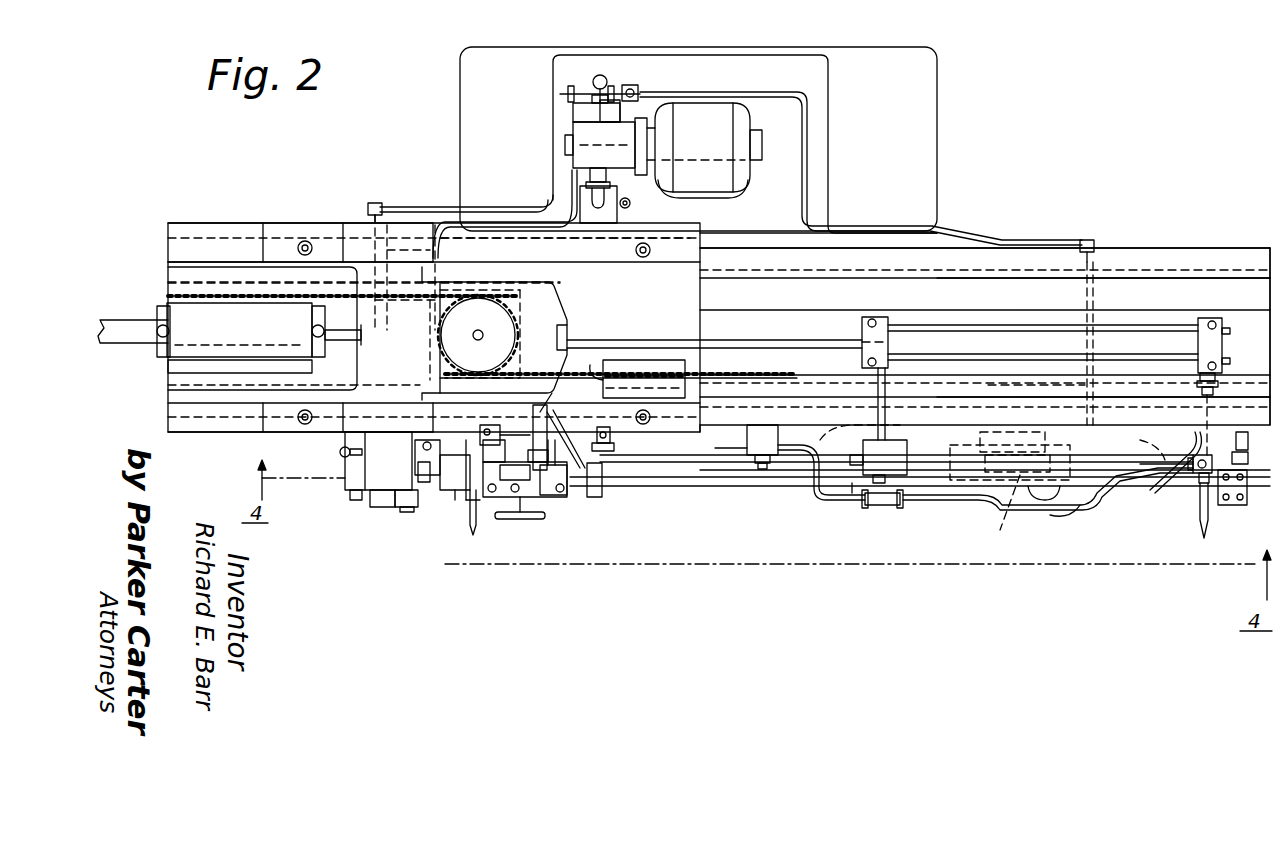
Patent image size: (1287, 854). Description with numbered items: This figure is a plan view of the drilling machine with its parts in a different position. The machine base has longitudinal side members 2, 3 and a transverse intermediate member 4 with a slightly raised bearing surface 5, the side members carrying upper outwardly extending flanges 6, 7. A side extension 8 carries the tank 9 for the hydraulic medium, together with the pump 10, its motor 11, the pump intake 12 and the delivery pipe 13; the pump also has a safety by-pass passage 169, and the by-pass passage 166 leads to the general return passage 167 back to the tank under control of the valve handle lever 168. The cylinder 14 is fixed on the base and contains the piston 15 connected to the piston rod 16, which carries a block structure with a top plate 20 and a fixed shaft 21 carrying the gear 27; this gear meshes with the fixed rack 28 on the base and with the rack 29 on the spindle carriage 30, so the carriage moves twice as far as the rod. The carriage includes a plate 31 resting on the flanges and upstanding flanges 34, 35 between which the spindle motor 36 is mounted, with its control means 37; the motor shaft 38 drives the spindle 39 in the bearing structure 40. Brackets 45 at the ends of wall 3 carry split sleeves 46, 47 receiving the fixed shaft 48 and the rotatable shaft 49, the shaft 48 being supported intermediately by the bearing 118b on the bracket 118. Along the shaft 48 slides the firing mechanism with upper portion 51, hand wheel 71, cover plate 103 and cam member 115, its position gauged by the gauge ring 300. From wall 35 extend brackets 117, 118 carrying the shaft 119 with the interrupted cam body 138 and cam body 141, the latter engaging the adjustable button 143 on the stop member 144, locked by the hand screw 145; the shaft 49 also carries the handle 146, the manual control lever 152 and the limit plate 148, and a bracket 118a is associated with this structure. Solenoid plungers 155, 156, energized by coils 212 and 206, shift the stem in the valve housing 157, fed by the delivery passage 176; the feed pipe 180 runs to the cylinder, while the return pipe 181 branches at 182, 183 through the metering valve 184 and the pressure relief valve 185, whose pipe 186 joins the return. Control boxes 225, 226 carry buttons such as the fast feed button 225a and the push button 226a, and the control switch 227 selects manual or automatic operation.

The longitudinal side member 2 is at (1120, 266).
The longitudinal side member 3 is at (1160, 458).
The transverse intermediate member 4 is at (1218, 292).
The bearing surface 5 is at (1242, 322).
The upper flange 6 is at (1188, 266).
The upper flange 7 is at (1143, 406).
The side extension 8 is at (873, 56).
The tank 9 is at (751, 65).
The pump 10 is at (622, 172).
The motor 11 is at (752, 118).
The pump intake 12 is at (618, 210).
The delivery pipe 13 is at (565, 145).
The cylinder 14 is at (1125, 345).
The piston 15 is at (893, 332).
The piston rod 16 is at (812, 340).
The top plate 20 is at (440, 356).
The fixed shaft 21 is at (478, 333).
The gear 27 is at (440, 337).
The fixed rack 28 is at (790, 377).
The rack 29 is at (185, 284).
The spindle carriage 30 is at (225, 224).
The plate 31 is at (172, 392).
The upstanding flange 34 is at (182, 258).
The upstanding flange 35 is at (234, 405).
The spindle motor 36 is at (546, 292).
The control means 37 is at (630, 371).
The motor shaft 38 is at (338, 344).
The spindle 39 is at (140, 346).
The bearing structure 40 is at (185, 318).
The bracket 45 is at (1246, 448).
The split shaft receiving sleeve 46 is at (1247, 484).
The split shaft receiving sleeve 47 is at (1246, 460).
The shaft 48 is at (700, 488).
The shaft 49 is at (648, 462).
The upper portion 51 is at (500, 497).
The hand wheel 71 is at (519, 520).
The cover plate 103 is at (560, 497).
The cam member 115 is at (548, 480).
The bracket 117 is at (540, 412).
The bracket 118 is at (564, 437).
The arm 118a is at (572, 482).
The bearing 118b is at (604, 493).
The shaft 119 is at (611, 435).
The interrupted cam body 138 is at (514, 433).
The cam body 141 is at (624, 446).
The adjustable button 143 is at (1185, 458).
The stop member 144 is at (1195, 474).
The hand screw 145 is at (1200, 485).
The handle 146 is at (1203, 540).
The limit plate 148 is at (418, 466).
The manual control lever 152 is at (475, 537).
The solenoid plunger 155 is at (960, 455).
The solenoid plunger 156 is at (1142, 440).
The valve housing 157 is at (1012, 510).
The by-pass passage 166 is at (556, 208).
The return passage 167 is at (646, 92).
The valve handle lever 168 is at (340, 452).
The safety by-pass passage 169 is at (600, 75).
The delivery passage 176 is at (835, 426).
The feed pipe 180 is at (1216, 392).
The return pipe 181 is at (887, 385).
The branch 182 is at (822, 496).
The branch 183 is at (950, 510).
The metering valve 184 is at (747, 434).
The pressure relief valve 185 is at (872, 448).
The pipe 186 is at (856, 508).
The coil 206 is at (1085, 508).
The coil 212 is at (958, 442).
The control box 225 is at (375, 505).
The fast feed button 225a is at (382, 510).
The control box 226 is at (412, 510).
The push button 226a is at (408, 512).
The control switch 227 is at (355, 502).
The gauge ring 300 is at (468, 497).